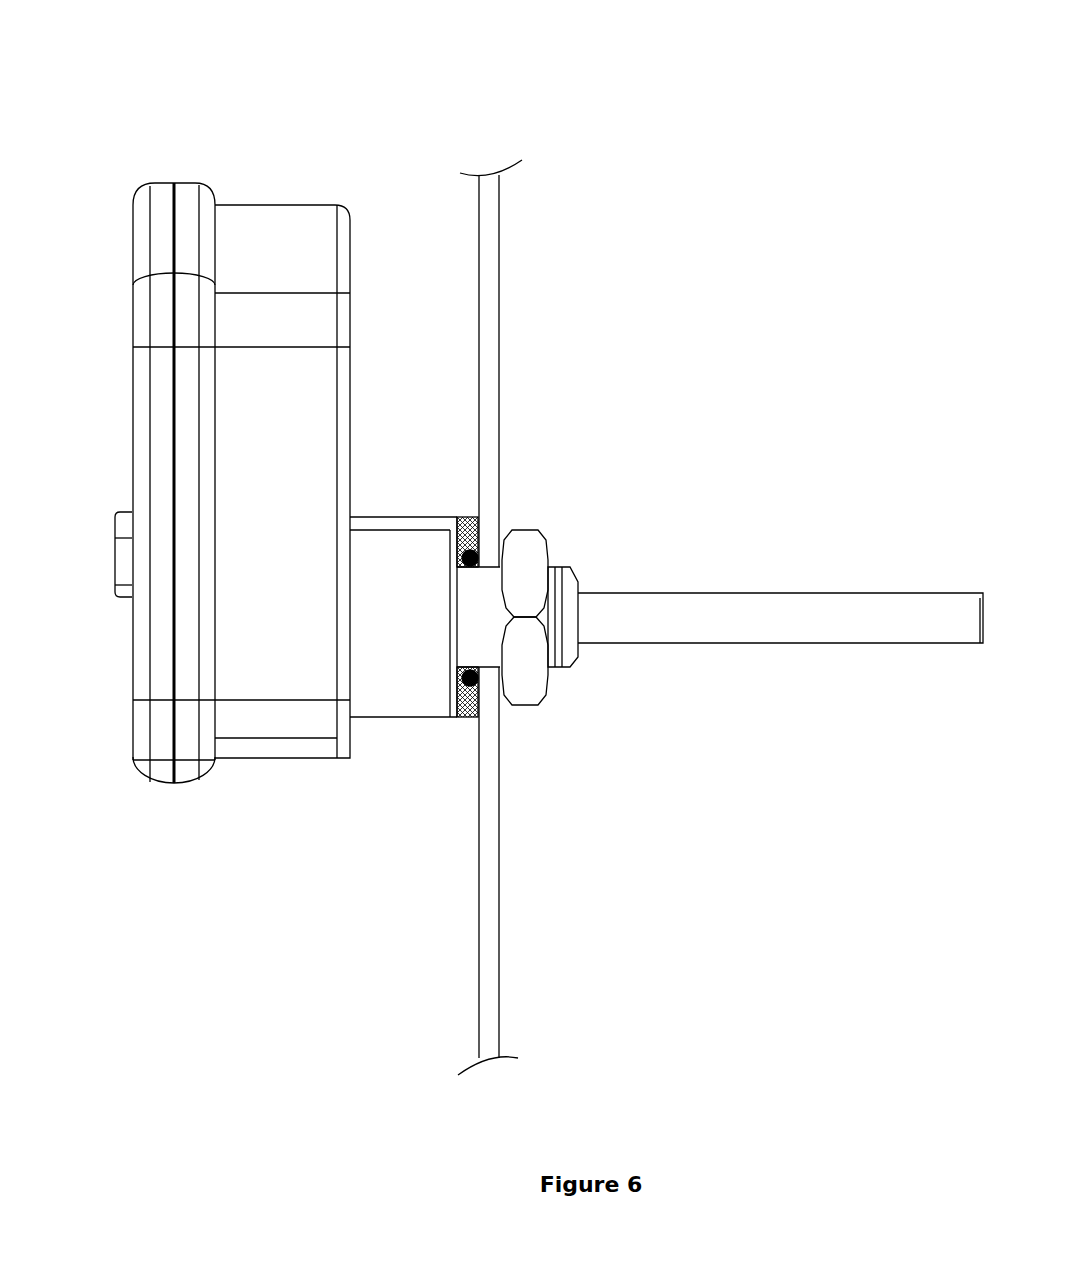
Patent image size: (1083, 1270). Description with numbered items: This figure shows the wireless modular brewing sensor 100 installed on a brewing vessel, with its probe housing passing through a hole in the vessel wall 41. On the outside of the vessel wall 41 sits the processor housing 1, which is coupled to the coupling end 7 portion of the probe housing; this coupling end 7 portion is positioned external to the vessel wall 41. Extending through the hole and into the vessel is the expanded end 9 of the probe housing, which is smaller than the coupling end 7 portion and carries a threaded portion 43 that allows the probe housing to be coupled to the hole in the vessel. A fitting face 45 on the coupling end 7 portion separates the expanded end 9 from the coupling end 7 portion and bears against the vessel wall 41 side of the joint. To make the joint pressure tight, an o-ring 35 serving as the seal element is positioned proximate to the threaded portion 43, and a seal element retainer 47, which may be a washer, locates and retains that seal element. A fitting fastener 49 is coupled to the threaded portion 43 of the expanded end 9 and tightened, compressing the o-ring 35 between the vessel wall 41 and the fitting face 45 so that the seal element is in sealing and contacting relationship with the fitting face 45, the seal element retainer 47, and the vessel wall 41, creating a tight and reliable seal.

The wireless modular brewing sensor 100 is at (162, 135).
The processor housing 1 is at (157, 187).
The coupling end portion 7 is at (380, 515).
The vessel wall 41 is at (490, 280).
The fitting face 45 is at (457, 533).
The seal element retainer 47 is at (467, 718).
The o-ring 35 is at (458, 680).
The fitting fastener 49 is at (532, 702).
The threaded portion 43 is at (573, 575).
The expanded end 9 is at (773, 595).